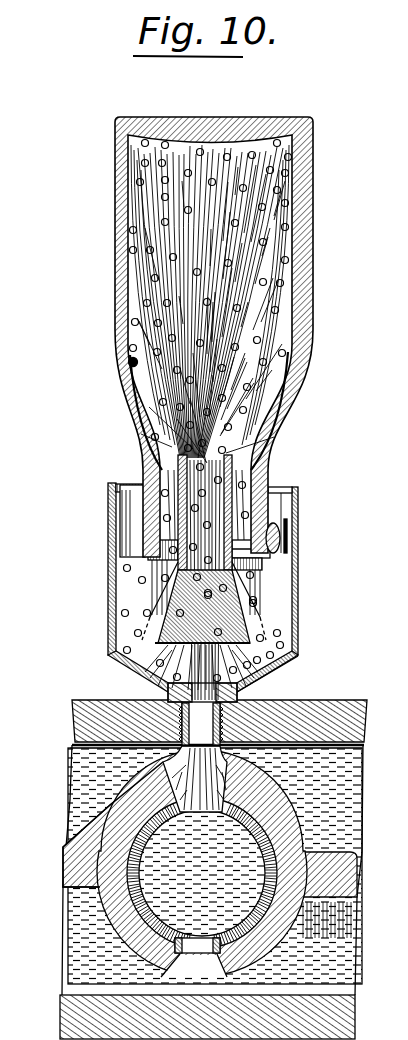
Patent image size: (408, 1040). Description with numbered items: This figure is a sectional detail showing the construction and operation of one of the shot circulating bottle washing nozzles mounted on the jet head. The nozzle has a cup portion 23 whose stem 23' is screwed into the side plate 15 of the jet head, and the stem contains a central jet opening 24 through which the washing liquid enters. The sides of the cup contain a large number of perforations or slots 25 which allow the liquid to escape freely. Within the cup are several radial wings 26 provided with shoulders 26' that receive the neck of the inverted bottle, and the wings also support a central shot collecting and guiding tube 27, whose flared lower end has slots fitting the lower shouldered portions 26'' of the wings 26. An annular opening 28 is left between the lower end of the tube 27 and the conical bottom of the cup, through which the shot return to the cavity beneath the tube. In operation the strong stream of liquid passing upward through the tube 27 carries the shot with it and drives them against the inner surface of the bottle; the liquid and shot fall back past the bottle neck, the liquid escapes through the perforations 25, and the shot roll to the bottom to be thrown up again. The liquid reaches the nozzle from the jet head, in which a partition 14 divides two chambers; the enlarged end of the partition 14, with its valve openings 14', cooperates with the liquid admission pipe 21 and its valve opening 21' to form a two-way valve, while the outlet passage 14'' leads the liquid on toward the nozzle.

The partition 14 is at (189, 870).
The valve openings 14' is at (194, 775).
The outlet of tube 14'' is at (161, 965).
The side plates 15 is at (328, 714).
The liquid admission pipe 21 is at (175, 879).
The valve opening 21' is at (192, 863).
The cup portion 23 is at (221, 587).
The stem 23' is at (267, 678).
The central jet opening 24 is at (168, 690).
The perforations or slots 25 is at (153, 582).
The radial wings 26 is at (227, 527).
The shoulders 26' is at (310, 529).
The lower shouldered portions 26'' is at (242, 649).
The shot collecting and guiding tube 27 is at (235, 498).
The annular opening 28 is at (157, 645).